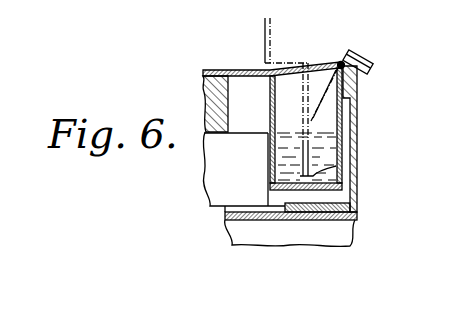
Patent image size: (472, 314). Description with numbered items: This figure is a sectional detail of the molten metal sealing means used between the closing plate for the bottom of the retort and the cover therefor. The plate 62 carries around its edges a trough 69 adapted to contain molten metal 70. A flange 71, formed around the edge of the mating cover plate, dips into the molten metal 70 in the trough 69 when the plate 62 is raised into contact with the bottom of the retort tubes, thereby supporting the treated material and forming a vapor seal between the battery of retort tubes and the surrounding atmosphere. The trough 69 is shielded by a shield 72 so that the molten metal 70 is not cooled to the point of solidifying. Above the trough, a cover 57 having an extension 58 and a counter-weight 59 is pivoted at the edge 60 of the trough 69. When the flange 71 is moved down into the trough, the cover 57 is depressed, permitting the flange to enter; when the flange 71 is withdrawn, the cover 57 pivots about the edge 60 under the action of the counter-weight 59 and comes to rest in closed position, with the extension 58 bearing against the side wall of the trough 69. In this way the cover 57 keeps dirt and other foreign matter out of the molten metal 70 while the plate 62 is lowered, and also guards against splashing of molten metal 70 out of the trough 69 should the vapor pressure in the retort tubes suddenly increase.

The cover 57 is at (318, 68).
The extension 58 is at (364, 64).
The counter-weight 59 is at (358, 93).
The edge 60 is at (343, 62).
The plate 62 is at (227, 70).
The trough 69 is at (342, 138).
The molten metal 70 is at (327, 163).
The flange 71 is at (313, 174).
The shield 72 is at (355, 207).